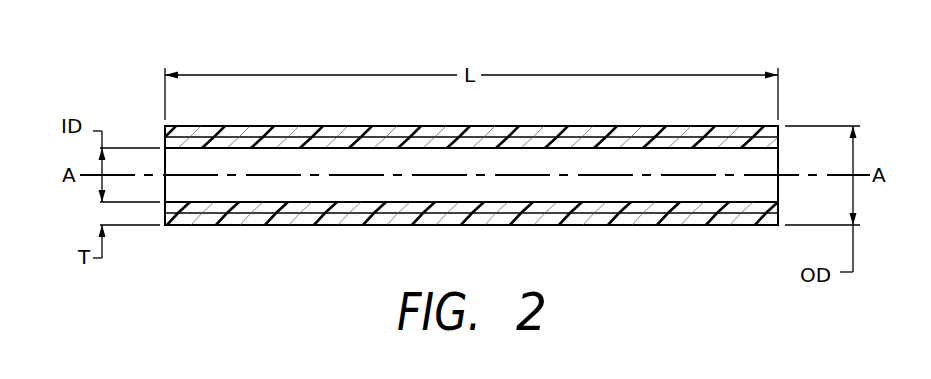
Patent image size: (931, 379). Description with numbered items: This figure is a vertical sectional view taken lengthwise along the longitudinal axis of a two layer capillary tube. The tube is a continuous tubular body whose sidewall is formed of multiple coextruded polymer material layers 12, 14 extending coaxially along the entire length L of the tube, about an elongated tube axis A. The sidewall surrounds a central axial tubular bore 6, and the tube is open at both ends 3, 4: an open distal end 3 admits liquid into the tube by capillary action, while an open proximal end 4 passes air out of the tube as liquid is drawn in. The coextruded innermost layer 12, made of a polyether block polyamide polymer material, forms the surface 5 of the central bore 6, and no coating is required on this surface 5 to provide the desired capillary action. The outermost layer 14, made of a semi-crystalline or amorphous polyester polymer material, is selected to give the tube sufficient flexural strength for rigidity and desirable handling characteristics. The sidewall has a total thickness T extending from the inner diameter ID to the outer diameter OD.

The open distal end 3 is at (790, 142).
The open proximal end 4 is at (158, 162).
The surface of the central bore 5 is at (580, 150).
The central axial tubular bore 6 is at (370, 195).
The innermost layer 12 is at (250, 135).
The outermost layer 14 is at (562, 127).